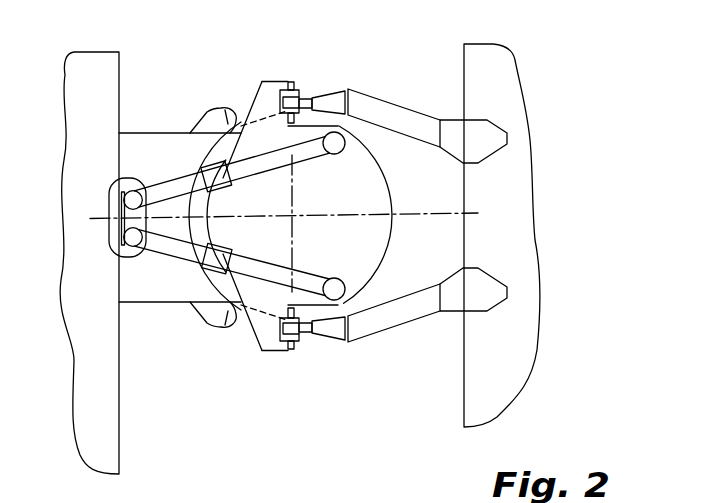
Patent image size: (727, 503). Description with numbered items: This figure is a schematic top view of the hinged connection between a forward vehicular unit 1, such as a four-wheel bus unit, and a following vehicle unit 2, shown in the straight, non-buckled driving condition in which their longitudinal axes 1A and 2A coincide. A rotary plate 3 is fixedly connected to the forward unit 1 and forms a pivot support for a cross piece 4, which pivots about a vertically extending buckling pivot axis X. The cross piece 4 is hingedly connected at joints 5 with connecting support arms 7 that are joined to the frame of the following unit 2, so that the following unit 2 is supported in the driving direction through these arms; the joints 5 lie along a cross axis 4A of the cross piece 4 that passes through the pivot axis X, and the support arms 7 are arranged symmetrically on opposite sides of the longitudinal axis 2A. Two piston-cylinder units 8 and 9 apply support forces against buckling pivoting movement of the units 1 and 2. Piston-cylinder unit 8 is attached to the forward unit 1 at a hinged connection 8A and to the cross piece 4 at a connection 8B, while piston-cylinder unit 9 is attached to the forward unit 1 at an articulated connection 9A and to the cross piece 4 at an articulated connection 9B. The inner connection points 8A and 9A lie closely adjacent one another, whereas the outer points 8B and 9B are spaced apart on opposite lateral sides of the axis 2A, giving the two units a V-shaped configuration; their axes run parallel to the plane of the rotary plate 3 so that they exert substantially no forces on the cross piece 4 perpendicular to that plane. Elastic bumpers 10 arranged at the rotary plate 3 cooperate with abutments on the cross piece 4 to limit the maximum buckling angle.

The forward vehicular unit 1 is at (108, 76).
The longitudinal axis of forward vehicular unit 1A is at (112, 217).
The following vehicle unit 2 is at (500, 73).
The longitudinal axis of following vehicle unit 2A is at (403, 213).
The rotary plate 3 is at (390, 198).
The cross piece 4 is at (336, 208).
The cross axis of cross piece 4A is at (292, 257).
The joints 5 is at (283, 80).
The connecting support arms 7 is at (388, 104).
The piston-cylinder unit 8 is at (164, 192).
The hinged connection 8A is at (122, 178).
The connection 8B is at (333, 134).
The piston-cylinder unit 9 is at (170, 248).
The articulated connection 9A is at (133, 240).
The articulated connection 9B is at (333, 300).
The elastic bumpers 10 is at (227, 110).
The buckling pivot axis X is at (292, 204).